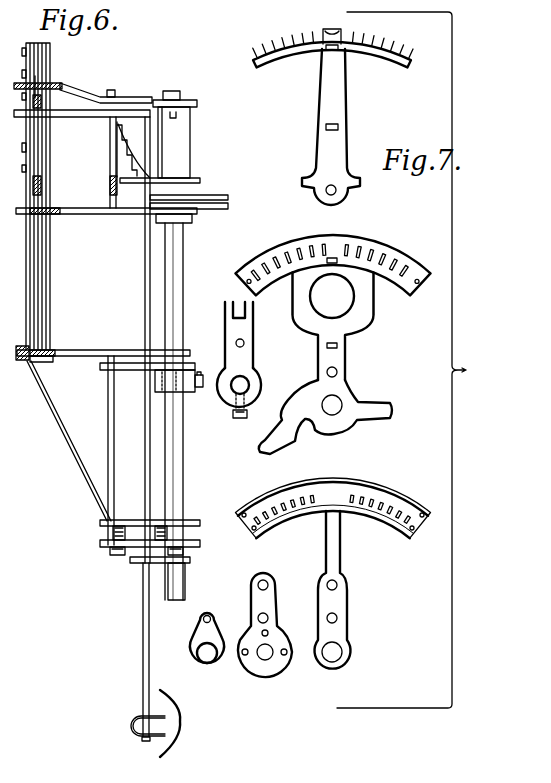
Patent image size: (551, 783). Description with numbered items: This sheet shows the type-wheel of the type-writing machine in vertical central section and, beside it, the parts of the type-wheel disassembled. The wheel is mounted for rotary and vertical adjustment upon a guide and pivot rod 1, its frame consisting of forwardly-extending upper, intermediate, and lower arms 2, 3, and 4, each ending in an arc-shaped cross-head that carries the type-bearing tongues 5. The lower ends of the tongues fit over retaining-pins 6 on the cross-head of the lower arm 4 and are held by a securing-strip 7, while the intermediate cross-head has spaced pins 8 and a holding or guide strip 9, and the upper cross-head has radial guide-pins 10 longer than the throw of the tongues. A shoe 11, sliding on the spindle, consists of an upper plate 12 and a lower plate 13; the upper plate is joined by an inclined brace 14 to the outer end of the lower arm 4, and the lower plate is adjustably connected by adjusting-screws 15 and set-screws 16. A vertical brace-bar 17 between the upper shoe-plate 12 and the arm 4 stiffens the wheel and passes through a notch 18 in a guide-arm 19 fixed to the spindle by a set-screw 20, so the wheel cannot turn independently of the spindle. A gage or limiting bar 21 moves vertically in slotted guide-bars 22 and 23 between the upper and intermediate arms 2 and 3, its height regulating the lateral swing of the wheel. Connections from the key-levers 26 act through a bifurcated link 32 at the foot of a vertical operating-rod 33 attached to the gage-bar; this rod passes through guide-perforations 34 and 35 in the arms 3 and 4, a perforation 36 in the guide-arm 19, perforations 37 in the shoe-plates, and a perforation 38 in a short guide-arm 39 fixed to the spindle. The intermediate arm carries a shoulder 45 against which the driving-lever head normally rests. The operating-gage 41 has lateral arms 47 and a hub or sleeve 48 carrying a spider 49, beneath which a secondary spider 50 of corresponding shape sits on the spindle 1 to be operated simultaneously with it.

In FIG. 6, the guide and pivot rod 1 is at (176, 278).
In FIG. 6, the upper arm 2 is at (83, 86).
In FIG. 7, the upper arm 2 is at (328, 125).
In FIG. 6, the intermediate arm 3 is at (84, 214).
In FIG. 7, the intermediate arm 3 is at (333, 319).
In FIG. 6, the lower arm 4 is at (75, 352).
In FIG. 7, the lower arm 4 is at (357, 560).
In FIG. 6, the type-bearing tongues 5 is at (48, 263).
In FIG. 6, the retaining-pins 6 is at (17, 358).
In FIG. 7, the retaining-pins 6 is at (306, 508).
In FIG. 7, the securing-strip 7 is at (385, 486).
In FIG. 7, the spaced pins 8 is at (354, 256).
In FIG. 7, the holding or guide strip 9 is at (300, 237).
In FIG. 7, the radial guide-pins 10 is at (283, 35).
In FIG. 6, the shoe 11 is at (134, 548).
In FIG. 6, the upper plate 12 is at (191, 520).
In FIG. 6, the lower plate 13 is at (190, 550).
In FIG. 7, the lower plate 13 is at (265, 672).
In FIG. 6, the inclined brace 14 is at (72, 462).
In FIG. 6, the adjusting-screws 15 is at (152, 520).
In FIG. 6, the set-screws 16 is at (110, 554).
In FIG. 6, the vertical brace-bar 17 is at (109, 425).
In FIG. 7, the notch 18 is at (233, 310).
In FIG. 6, the guide-arm 19 is at (128, 370).
In FIG. 7, the guide-arm 19 is at (226, 333).
In FIG. 6, the set-screw 20 is at (200, 387).
In FIG. 6, the gage or limiting bar 21 is at (72, 118).
In FIG. 6, the slotted guide-bar 22 is at (41, 186).
In FIG. 6, the slotted guide-bar 23 is at (110, 190).
In FIG. 7, the key-levers 26 is at (240, 418).
In FIG. 6, the bifurcated link 32 is at (181, 722).
In FIG. 6, the vertical operating-rod 33 is at (137, 340).
In FIG. 7, the guide-perforation 34 is at (338, 372).
In FIG. 7, the guide-perforation 35 is at (338, 618).
In FIG. 7, the perforation 36 is at (245, 343).
In FIG. 7, the perforation 37 is at (268, 618).
In FIG. 7, the perforation 38 is at (199, 633).
In FIG. 6, the short guide-arm 39 is at (151, 563).
In FIG. 7, the short guide-arm 39 is at (212, 670).
In FIG. 6, the operating-gage 41 is at (122, 152).
In FIG. 7, the shoulder 45 is at (292, 306).
In FIG. 6, the lateral arms 47 is at (190, 178).
In FIG. 6, the hub or sleeve 48 is at (188, 136).
In FIG. 6, the spider 49 is at (218, 196).
In FIG. 6, the secondary spider 50 is at (195, 216).
In FIG. 7, the secondary spider 50 is at (323, 428).